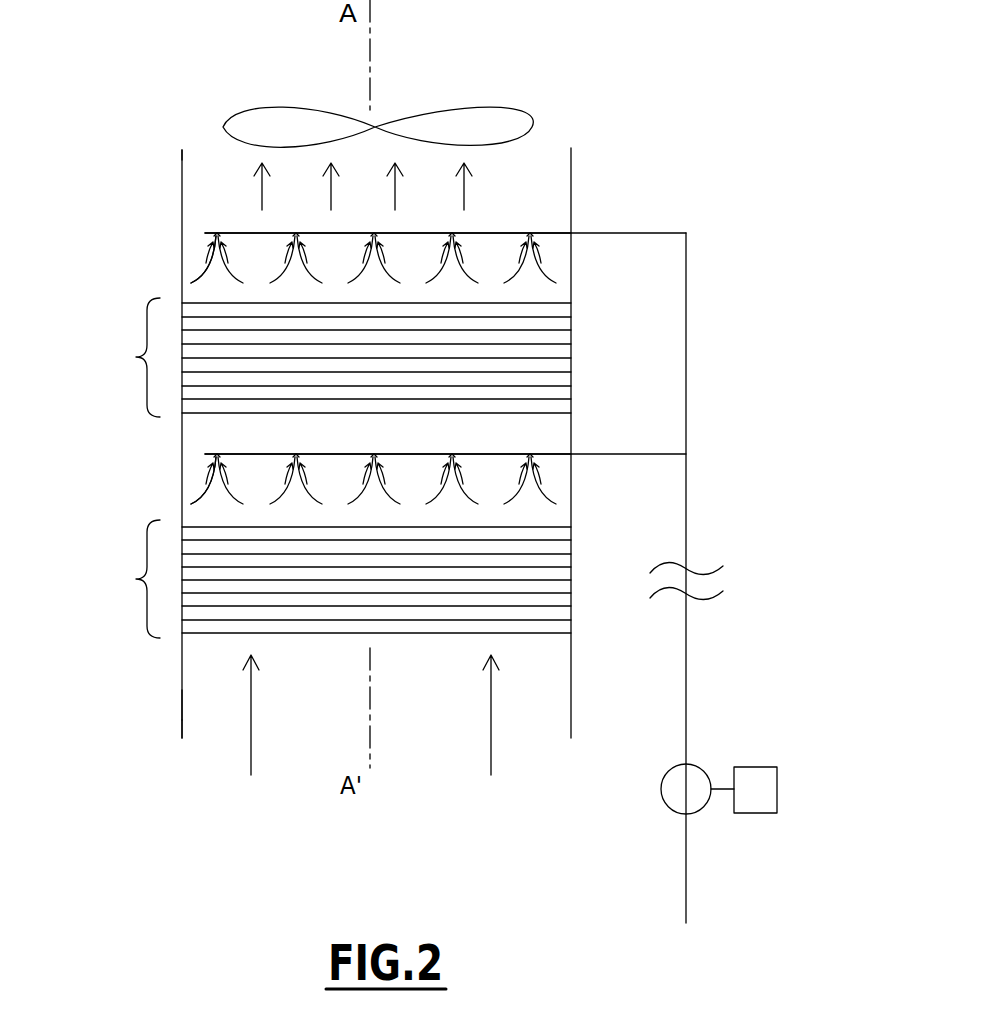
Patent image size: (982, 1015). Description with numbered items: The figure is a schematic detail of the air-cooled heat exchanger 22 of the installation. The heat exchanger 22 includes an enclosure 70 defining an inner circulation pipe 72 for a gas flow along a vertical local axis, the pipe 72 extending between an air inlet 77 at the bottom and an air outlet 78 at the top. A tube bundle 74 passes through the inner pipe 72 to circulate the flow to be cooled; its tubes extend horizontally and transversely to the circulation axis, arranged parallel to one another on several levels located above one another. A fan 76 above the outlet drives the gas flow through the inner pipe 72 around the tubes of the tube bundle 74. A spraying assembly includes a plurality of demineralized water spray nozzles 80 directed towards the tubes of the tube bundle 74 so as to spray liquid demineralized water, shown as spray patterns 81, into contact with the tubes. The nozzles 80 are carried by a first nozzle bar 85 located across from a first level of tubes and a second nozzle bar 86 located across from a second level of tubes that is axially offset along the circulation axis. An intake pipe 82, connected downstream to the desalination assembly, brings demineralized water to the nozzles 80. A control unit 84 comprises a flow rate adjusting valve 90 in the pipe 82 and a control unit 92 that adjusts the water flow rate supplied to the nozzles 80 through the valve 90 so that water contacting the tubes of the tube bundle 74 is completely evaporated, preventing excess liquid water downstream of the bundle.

The air-cooled heat exchanger 22 is at (152, 723).
The enclosure 70 is at (182, 493).
The inner circulation pipe 72 is at (226, 670).
The tube bundle 74 is at (557, 276).
The fan 76 is at (222, 122).
The air inlet 77 is at (206, 735).
The air outlet 78 is at (203, 165).
The demineralized water spray nozzle 80 is at (378, 240).
The spray pattern 81 is at (295, 272).
The intake pipe 82 is at (693, 476).
The control unit 84 is at (651, 823).
The first nozzle bar 85 is at (238, 234).
The second nozzle bar 86 is at (238, 454).
The flow rate adjusting valve 90 is at (670, 793).
The control unit 92 is at (755, 782).